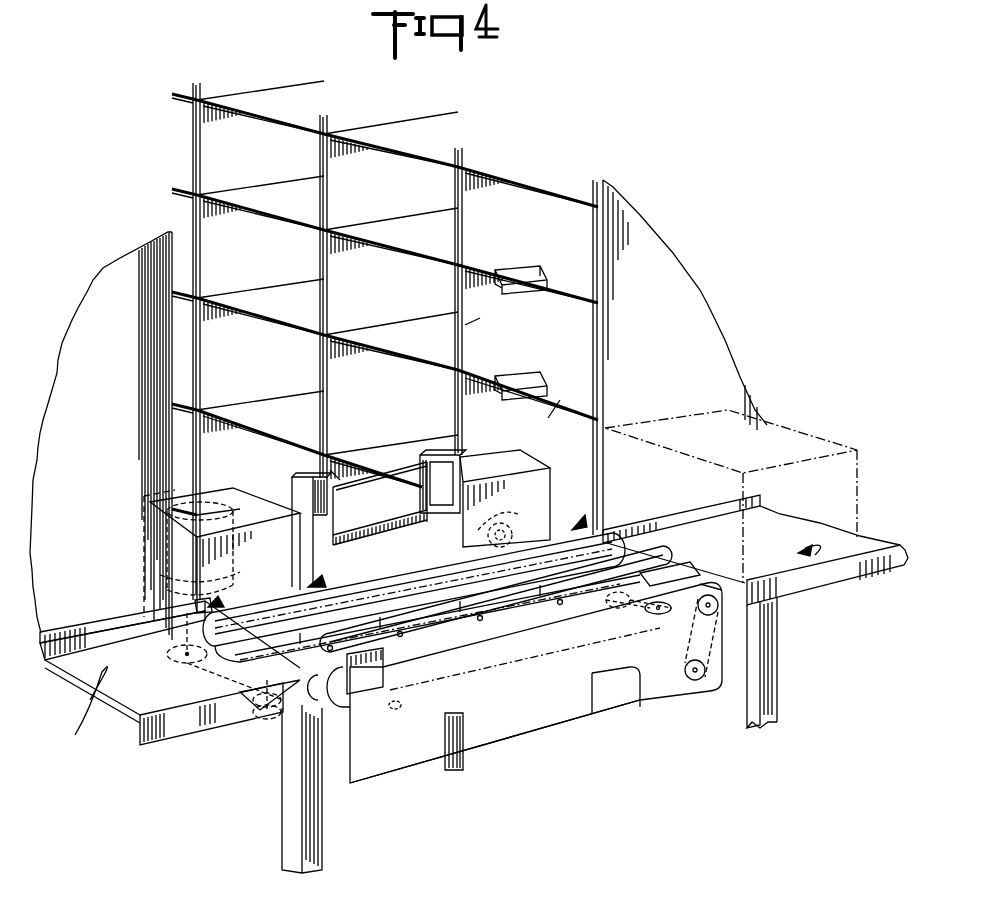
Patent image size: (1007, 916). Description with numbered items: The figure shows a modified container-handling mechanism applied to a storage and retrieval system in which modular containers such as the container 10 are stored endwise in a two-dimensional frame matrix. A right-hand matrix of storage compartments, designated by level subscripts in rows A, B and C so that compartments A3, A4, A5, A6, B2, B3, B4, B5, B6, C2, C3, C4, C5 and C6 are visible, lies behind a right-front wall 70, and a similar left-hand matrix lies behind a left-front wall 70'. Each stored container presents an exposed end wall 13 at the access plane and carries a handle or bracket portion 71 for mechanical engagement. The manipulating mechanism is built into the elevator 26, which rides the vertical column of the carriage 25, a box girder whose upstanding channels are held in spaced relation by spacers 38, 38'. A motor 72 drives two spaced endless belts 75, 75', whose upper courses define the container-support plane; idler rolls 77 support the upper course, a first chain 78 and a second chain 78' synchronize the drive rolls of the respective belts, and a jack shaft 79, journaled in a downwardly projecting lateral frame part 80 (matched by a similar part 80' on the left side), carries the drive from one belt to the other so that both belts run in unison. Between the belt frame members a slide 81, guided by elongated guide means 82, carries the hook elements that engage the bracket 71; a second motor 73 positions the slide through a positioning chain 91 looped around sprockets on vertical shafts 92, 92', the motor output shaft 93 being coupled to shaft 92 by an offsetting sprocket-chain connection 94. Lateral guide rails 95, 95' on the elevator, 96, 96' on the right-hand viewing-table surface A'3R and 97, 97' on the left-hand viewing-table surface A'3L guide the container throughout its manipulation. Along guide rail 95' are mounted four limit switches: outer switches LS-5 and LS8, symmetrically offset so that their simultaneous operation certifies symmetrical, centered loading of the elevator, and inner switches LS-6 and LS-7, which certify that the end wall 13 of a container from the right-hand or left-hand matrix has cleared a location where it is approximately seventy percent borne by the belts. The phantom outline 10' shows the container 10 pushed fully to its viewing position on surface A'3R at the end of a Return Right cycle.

The container 10 is at (440, 334).
The container in viewing position 10' is at (731, 480).
The end wall 13 is at (470, 358).
The carriage 25 is at (460, 458).
The elevator 26 is at (573, 696).
The spacer 38 is at (380, 503).
The spacer 38' is at (380, 503).
The right-front wall 70 is at (680, 357).
The left-front wall 70' is at (101, 436).
The handle or bracket portion 71 is at (513, 376).
The drive motor 72 is at (502, 478).
The drive motor 73 is at (144, 532).
The endless belt 75 is at (675, 573).
The endless belt 75' is at (661, 560).
The idler roll 77 is at (604, 600).
The first chain 78 is at (536, 683).
The second chain 78' is at (414, 589).
The jack shaft 79 is at (660, 700).
The downwardly projecting lateral frame part 80 is at (702, 667).
The projecting frame part 80' is at (495, 758).
The slide 81 is at (462, 622).
The guide means 82 is at (240, 692).
The positioning chain 91 is at (396, 700).
The vertical shaft 92 is at (277, 789).
The vertical shaft 92' is at (616, 700).
The vertical output shaft 93 is at (128, 635).
The offsetting sprocket-chain connection 94 is at (187, 665).
The lateral-guide rail 95 is at (490, 650).
The lateral-guide rail 95' is at (231, 595).
The lateral-guide rail 96 is at (827, 617).
The lateral-guide rail 96' is at (681, 509).
The lateral-guide rail 97 is at (211, 735).
The lateral-guide rail 97' is at (122, 658).
The storage compartment A3 is at (567, 396).
The storage compartment A4 is at (578, 343).
The storage compartment A5 is at (580, 250).
The storage compartment A6 is at (465, 168).
The storage compartment B2 is at (336, 470).
The storage compartment B3 is at (391, 442).
The storage compartment B4 is at (391, 326).
The storage compartment B5 is at (391, 226).
The storage compartment B6 is at (370, 132).
The storage compartment C2 is at (217, 488).
The storage compartment C3 is at (297, 425).
The storage compartment C4 is at (385, 336).
The storage compartment C5 is at (385, 227).
The storage compartment C6 is at (230, 99).
The outer limit switch LS-5 is at (225, 550).
The inner limit switch LS-6 is at (318, 580).
The inner limit switch LS-7 is at (500, 515).
The outer limit switch LS8 is at (575, 515).
The left-hand viewing-table surface A'3L is at (88, 715).
The right-hand viewing-table surface A'3R is at (820, 585).